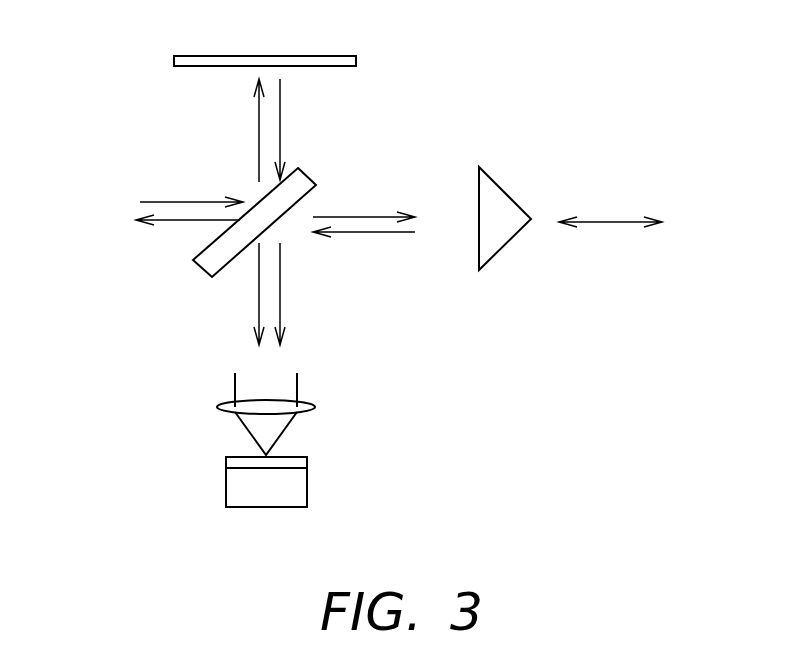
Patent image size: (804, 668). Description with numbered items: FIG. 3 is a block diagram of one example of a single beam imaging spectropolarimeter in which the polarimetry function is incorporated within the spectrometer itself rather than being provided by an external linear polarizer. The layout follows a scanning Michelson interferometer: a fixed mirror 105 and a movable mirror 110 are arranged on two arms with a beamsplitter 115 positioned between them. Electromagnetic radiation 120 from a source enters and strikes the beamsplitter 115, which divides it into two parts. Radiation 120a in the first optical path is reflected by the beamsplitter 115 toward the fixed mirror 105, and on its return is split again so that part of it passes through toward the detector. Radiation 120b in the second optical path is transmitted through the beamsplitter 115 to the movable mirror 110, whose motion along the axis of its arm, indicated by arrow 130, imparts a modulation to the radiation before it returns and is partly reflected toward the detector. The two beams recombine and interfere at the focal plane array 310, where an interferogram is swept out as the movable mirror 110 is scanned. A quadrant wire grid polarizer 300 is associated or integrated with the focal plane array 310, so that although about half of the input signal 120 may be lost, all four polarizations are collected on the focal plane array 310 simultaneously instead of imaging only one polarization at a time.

The fixed mirror 105 is at (356, 56).
The movable mirror 110 is at (514, 197).
The beamsplitter 115 is at (300, 172).
The electromagnetic radiation 120 is at (167, 202).
The radiation in first optical path 120a is at (221, 118).
The radiation in second optical path 120b is at (370, 258).
The arrow indicating motion of movable mirror 130 is at (607, 223).
The quadrant wire grid polarizer 300 is at (307, 457).
The focal plane array 310 is at (307, 493).